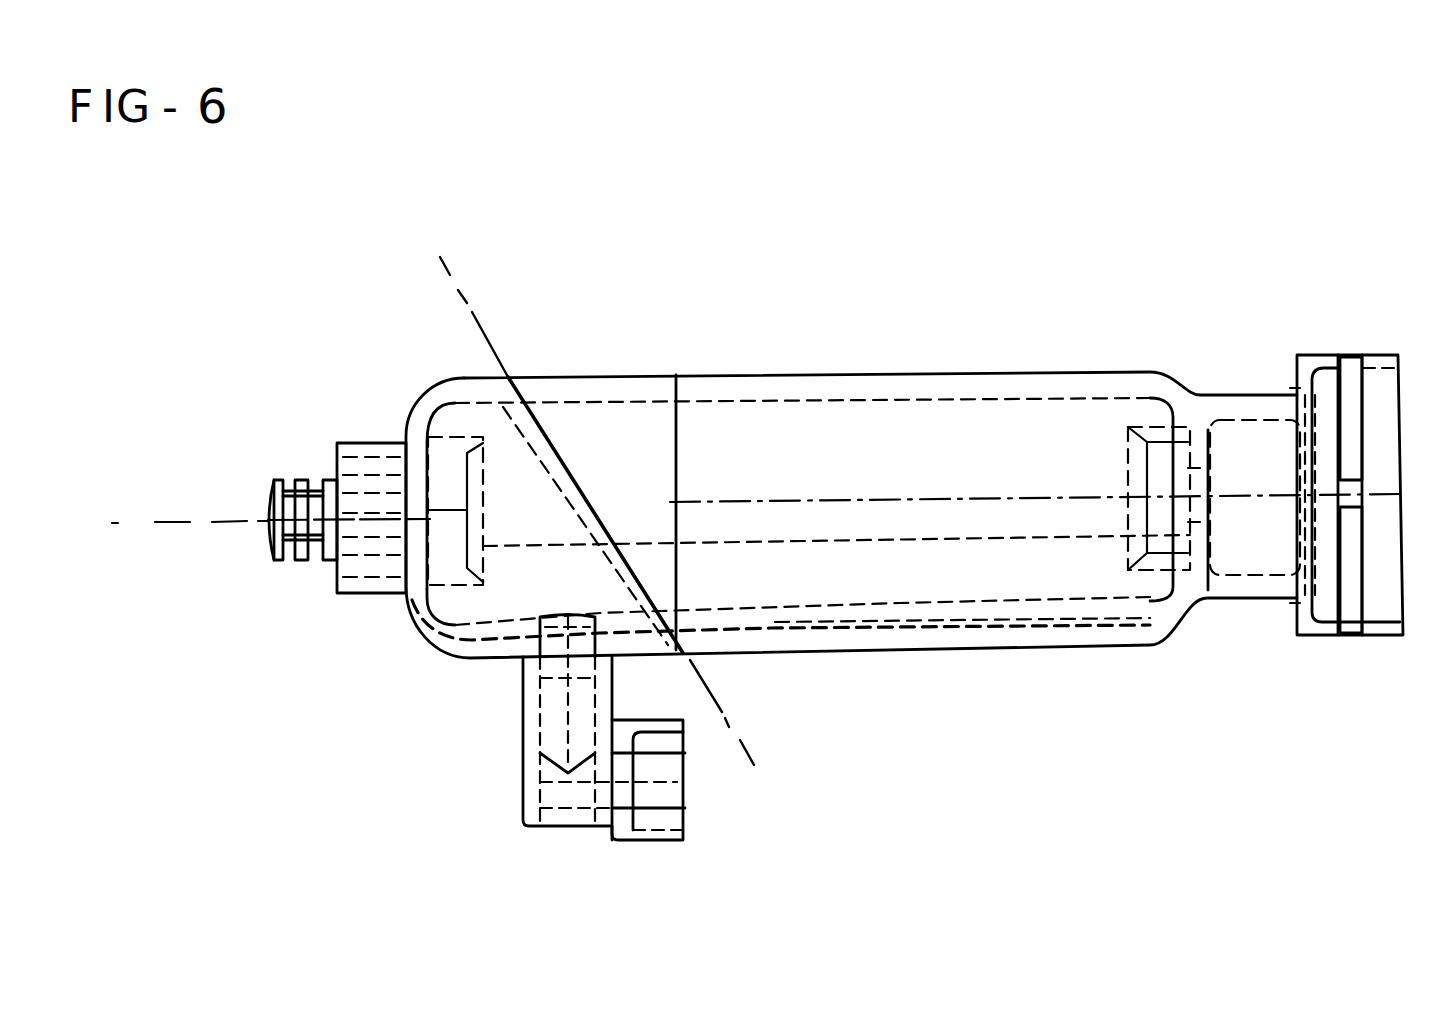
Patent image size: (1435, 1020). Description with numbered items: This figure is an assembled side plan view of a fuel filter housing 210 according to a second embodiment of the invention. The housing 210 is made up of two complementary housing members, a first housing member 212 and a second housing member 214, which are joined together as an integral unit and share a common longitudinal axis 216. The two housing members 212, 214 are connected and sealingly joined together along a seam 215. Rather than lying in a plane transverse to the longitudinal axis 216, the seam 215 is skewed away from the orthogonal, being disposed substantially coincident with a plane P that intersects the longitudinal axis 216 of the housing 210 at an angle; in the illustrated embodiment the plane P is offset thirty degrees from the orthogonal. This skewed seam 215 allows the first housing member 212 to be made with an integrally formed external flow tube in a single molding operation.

The fuel filter housing 210 is at (1098, 247).
The first housing member 212 is at (435, 657).
The second housing member 214 is at (1128, 655).
The seam 215 is at (575, 463).
The longitudinal axis 216 is at (182, 515).
The plane P is at (483, 312).